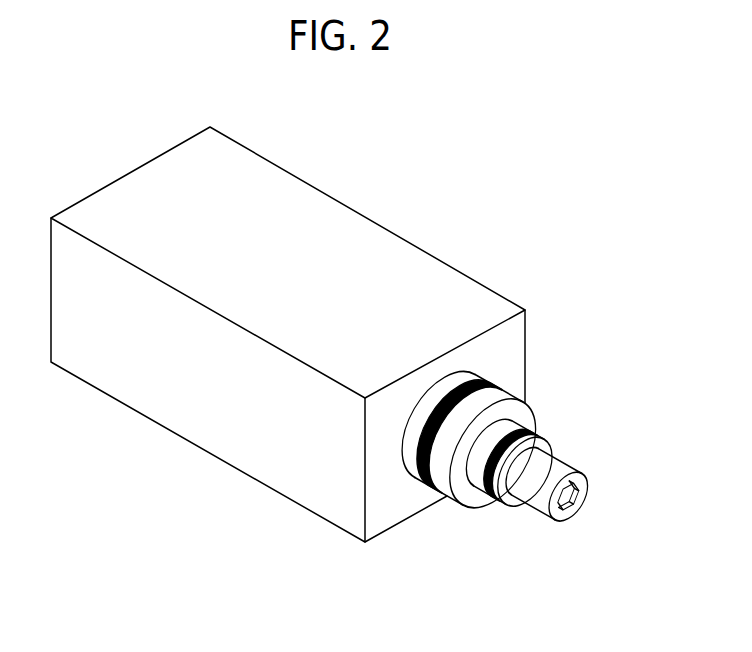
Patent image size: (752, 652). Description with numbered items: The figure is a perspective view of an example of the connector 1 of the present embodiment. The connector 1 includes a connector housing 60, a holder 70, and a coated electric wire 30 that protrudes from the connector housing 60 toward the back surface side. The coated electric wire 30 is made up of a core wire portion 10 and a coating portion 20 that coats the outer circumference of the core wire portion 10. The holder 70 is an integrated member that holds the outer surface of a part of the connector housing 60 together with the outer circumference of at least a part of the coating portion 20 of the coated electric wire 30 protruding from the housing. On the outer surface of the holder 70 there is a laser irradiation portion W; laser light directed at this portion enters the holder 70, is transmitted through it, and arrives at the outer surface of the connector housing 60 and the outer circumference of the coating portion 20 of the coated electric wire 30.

The connector 1 is at (556, 180).
The connector housing 60 is at (363, 207).
The holder 70 is at (542, 412).
The coated electric wire 30 is at (578, 457).
The coating portion 20 is at (552, 516).
The core wire portion 10 is at (590, 500).
The laser irradiation portion W is at (416, 462).